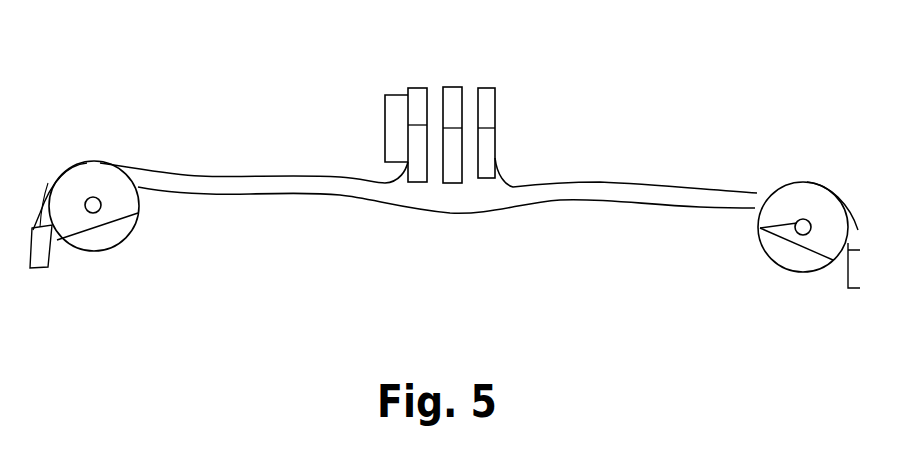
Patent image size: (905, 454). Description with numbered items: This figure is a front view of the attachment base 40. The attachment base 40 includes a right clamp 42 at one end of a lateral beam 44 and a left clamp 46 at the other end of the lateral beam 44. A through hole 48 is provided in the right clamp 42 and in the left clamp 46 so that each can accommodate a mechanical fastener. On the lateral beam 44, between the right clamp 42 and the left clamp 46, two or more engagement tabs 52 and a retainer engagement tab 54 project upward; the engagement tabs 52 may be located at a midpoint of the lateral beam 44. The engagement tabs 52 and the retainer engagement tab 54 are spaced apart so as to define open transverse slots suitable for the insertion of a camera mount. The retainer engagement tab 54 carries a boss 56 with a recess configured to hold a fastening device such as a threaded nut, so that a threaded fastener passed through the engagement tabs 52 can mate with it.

The attachment base 40 is at (192, 103).
The right clamp 42 is at (135, 227).
The lateral beam 44 is at (387, 203).
The left clamp 46 is at (793, 272).
The through hole 48 is at (92, 213).
The engagement tabs 52 is at (452, 87).
The retainer engagement tab 54 is at (418, 87).
The boss 56 is at (385, 95).